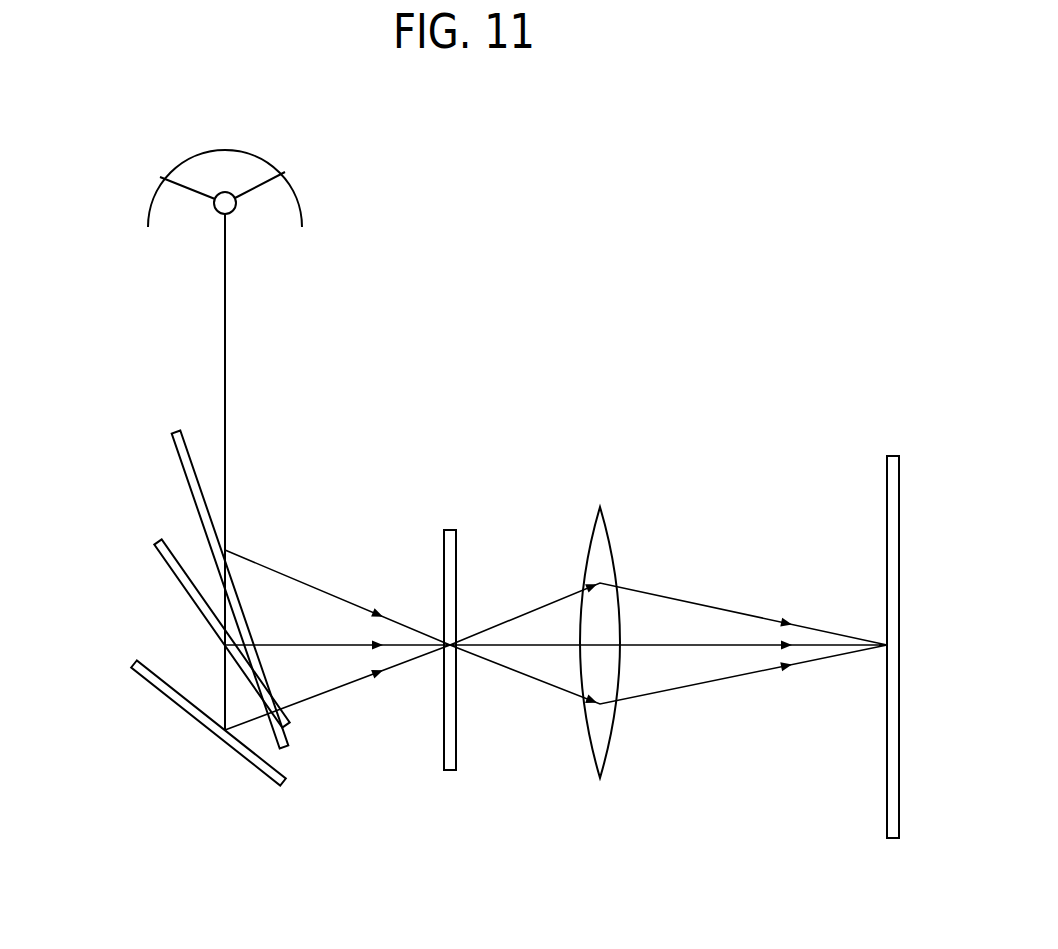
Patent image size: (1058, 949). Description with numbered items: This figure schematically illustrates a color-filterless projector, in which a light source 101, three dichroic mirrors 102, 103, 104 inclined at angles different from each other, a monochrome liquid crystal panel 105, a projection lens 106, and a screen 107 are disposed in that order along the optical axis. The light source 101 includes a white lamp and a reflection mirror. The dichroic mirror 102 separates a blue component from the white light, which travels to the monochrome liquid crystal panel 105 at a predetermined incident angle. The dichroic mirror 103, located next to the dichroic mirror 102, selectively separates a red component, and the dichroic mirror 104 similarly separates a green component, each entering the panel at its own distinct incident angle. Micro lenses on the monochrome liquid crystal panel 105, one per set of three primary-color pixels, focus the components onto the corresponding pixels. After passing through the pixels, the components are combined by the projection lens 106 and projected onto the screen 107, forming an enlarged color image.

The light source 101 is at (297, 188).
The dichroic mirror 102 is at (178, 457).
The dichroic mirror 103 is at (163, 563).
The dichroic mirror 104 is at (158, 693).
The monochrome liquid crystal panel 105 is at (445, 530).
The projection lens 106 is at (596, 522).
The screen 107 is at (890, 456).